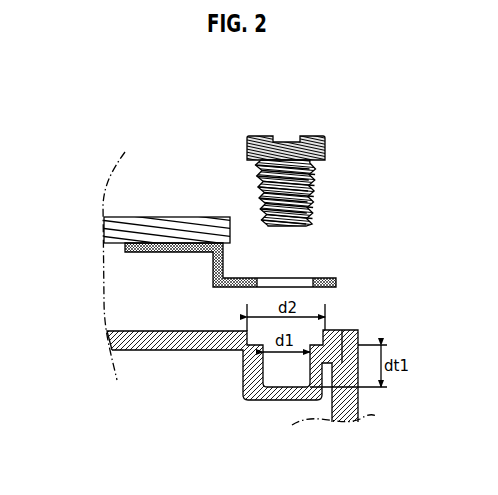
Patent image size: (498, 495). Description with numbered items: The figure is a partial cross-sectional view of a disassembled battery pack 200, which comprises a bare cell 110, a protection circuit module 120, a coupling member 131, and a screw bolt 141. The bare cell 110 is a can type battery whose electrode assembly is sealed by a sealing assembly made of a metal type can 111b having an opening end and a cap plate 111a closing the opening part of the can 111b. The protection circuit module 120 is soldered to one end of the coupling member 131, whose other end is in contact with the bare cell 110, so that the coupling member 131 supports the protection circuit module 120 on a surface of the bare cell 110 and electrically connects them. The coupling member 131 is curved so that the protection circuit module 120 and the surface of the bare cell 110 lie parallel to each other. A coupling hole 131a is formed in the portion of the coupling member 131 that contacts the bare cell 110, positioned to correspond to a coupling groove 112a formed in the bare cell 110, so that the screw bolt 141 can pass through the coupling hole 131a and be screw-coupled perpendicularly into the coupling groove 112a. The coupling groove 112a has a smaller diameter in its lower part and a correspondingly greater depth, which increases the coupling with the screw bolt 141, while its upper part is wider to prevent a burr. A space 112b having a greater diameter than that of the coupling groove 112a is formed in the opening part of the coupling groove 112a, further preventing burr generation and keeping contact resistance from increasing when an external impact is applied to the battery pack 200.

The battery pack 200 is at (87, 95).
The bare cell 110 is at (362, 404).
The cap plate 111a is at (113, 351).
The can 111b is at (345, 413).
The coupling groove 112a is at (287, 372).
The space 112b is at (338, 330).
The protection circuit module 120 is at (170, 217).
The coupling member 131 is at (213, 286).
The coupling hole 131a is at (305, 278).
The screw bolt 141 is at (328, 136).